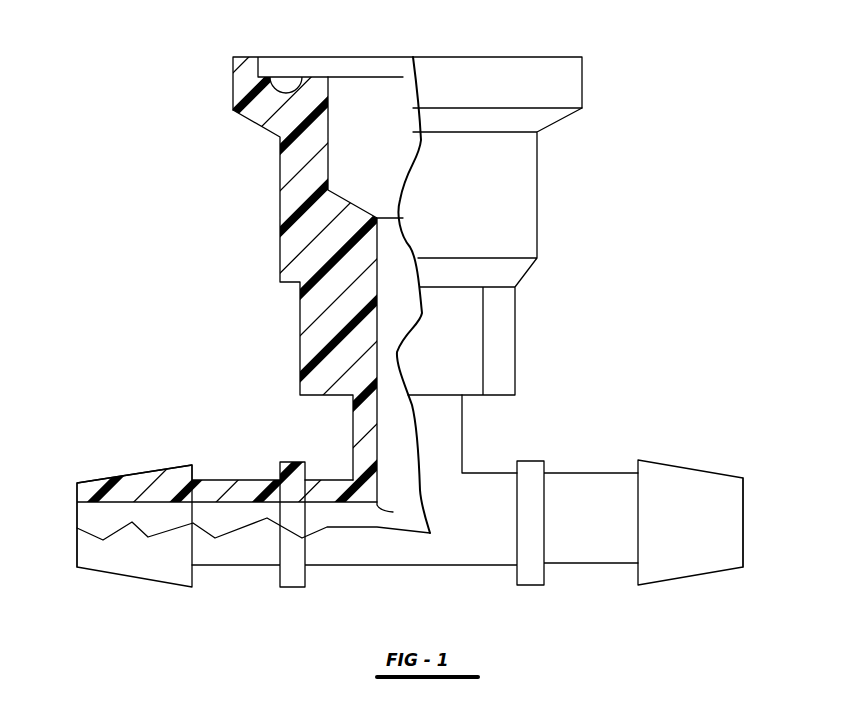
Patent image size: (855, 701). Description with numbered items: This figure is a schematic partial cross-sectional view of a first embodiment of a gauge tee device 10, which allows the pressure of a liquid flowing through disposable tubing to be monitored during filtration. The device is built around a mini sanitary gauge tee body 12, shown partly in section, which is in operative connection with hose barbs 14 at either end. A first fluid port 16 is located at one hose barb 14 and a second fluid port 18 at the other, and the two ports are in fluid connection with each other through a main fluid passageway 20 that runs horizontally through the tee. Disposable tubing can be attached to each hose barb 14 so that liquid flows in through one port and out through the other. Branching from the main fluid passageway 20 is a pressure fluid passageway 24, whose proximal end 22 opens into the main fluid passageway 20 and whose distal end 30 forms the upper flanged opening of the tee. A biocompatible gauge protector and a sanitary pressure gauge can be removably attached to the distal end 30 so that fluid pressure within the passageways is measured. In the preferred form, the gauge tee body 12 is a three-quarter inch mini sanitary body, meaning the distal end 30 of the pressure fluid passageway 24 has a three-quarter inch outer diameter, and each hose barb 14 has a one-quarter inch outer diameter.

The gauge tee device 10 is at (413, 353).
The mini sanitary gauge tee body 12 is at (542, 222).
The hose barb 14 is at (138, 583).
The first fluid port 16 is at (75, 508).
The second fluid port 18 is at (757, 530).
The main fluid passageway 20 is at (310, 517).
The proximal end 22 is at (440, 496).
The pressure fluid passageway 24 is at (393, 288).
The distal end 30 is at (232, 53).